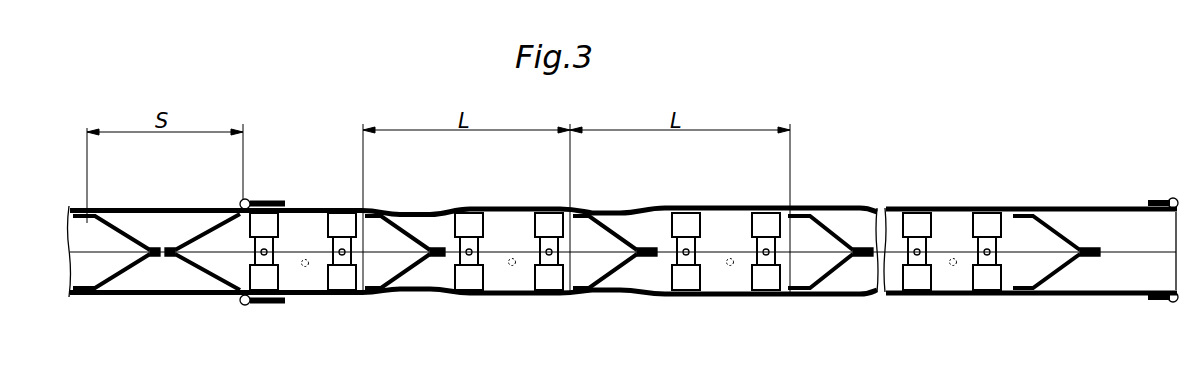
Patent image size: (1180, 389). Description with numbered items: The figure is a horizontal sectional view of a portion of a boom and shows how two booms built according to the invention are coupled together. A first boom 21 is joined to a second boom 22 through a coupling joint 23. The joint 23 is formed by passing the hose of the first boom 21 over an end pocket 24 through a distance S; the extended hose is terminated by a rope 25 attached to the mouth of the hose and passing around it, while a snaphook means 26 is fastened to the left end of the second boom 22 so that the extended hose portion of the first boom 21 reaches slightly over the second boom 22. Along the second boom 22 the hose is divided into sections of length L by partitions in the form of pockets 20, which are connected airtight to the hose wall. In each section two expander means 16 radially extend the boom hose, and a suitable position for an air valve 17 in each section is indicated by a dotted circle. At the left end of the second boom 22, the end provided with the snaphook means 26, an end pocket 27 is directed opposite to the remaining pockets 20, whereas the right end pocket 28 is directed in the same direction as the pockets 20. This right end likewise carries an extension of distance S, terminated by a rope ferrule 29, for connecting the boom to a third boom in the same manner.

The expander means 16 is at (346, 280).
The air valve 17 is at (317, 240).
The pocket 20 is at (400, 225).
The first boom 21 is at (132, 297).
The second boom 22 is at (800, 297).
The coupling joint 23 is at (258, 304).
The end pocket 24 is at (110, 225).
The rope 25 is at (242, 304).
The snaphook means 26 is at (248, 199).
The end pocket 27 is at (220, 225).
The right end pocket 28 is at (1050, 230).
The rope ferrule 29 is at (1168, 201).